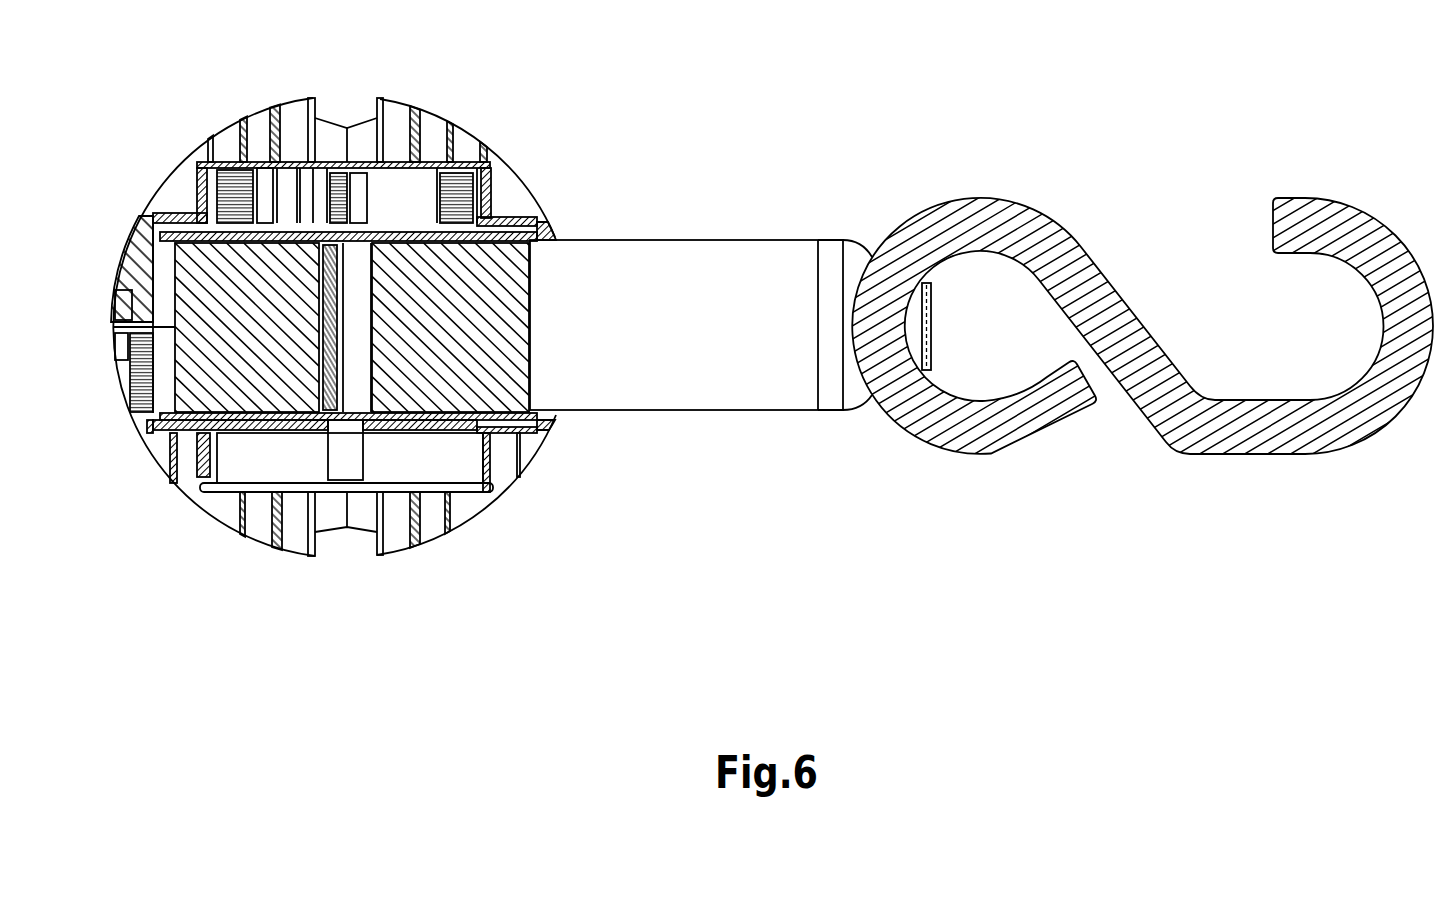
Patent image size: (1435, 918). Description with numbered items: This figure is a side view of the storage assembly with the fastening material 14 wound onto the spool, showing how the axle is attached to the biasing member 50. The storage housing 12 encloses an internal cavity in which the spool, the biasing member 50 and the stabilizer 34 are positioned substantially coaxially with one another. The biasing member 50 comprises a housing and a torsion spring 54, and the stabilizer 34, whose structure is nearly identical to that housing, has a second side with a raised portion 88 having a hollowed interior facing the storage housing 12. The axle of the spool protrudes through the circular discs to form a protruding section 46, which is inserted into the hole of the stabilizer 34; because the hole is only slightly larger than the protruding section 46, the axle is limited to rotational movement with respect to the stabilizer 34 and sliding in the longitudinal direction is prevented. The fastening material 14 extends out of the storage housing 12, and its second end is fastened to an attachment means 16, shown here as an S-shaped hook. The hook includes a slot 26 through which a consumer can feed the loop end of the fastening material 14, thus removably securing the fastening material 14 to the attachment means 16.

The storage housing 12 is at (155, 466).
The fastening material 14 is at (684, 262).
The attachment means 16 is at (1348, 210).
The slot 26 is at (1126, 425).
The stabilizer 34 is at (409, 444).
The protruding section 46 is at (367, 207).
The biasing member 50 is at (272, 214).
The torsion spring 54 is at (228, 160).
The raised portion 88 is at (480, 457).